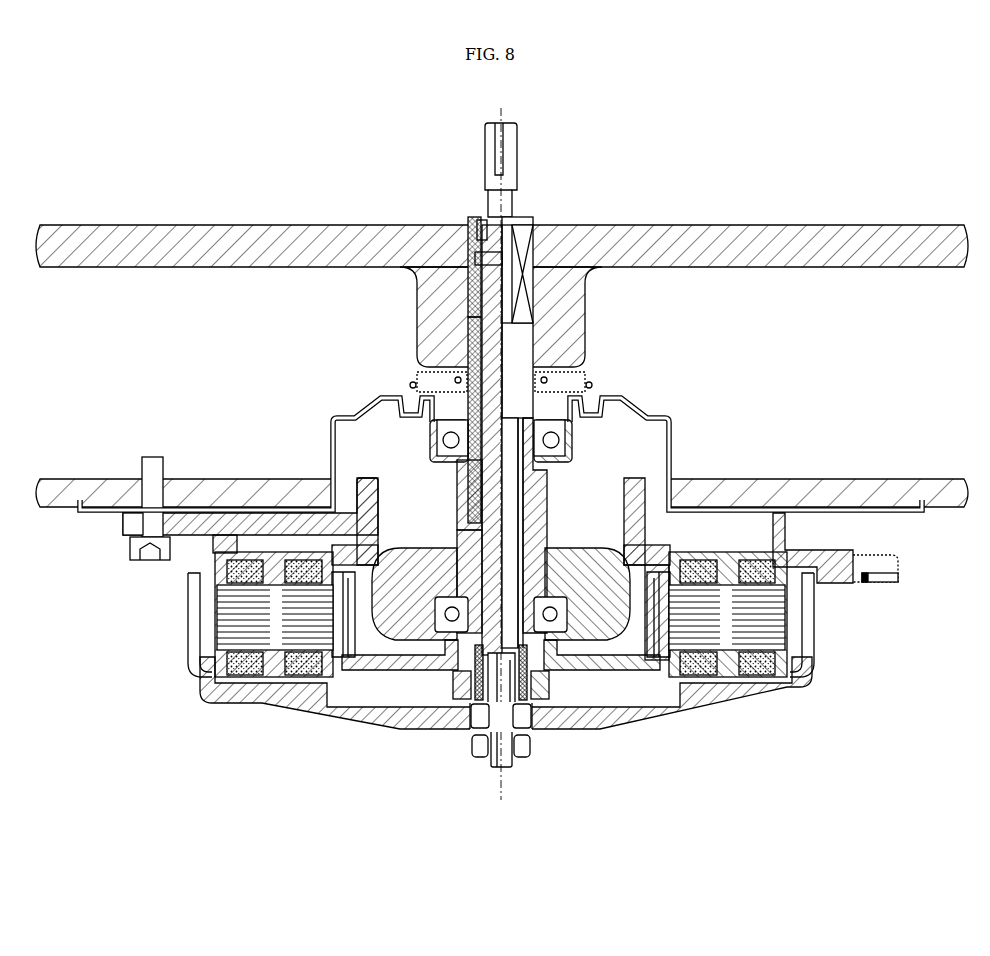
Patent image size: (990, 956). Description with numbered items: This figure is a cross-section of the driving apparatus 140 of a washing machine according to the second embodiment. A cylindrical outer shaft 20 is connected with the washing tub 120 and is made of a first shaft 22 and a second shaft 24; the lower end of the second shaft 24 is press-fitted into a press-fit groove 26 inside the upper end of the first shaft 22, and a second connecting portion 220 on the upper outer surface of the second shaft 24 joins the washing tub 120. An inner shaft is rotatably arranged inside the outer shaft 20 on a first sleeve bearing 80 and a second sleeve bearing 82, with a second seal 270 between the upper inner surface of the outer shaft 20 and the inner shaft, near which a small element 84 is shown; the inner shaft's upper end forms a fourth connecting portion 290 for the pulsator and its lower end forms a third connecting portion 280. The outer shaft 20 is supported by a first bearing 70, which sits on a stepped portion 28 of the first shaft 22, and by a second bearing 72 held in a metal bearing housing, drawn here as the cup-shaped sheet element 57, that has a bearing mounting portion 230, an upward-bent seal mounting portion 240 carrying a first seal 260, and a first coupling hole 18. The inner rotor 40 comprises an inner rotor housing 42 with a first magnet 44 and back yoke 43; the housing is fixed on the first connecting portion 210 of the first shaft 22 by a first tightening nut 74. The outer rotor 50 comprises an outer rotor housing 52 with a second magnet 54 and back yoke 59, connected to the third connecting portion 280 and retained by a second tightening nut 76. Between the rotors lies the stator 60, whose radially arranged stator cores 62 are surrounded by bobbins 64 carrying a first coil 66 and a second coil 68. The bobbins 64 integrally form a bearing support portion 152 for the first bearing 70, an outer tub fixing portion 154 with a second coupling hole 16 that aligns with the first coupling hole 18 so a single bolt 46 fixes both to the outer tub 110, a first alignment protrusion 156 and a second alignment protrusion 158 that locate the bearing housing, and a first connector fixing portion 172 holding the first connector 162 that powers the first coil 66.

The washing tub 120 is at (801, 225).
The outer tub 110 is at (860, 485).
The outer tub fixing portion 154 is at (195, 510).
The first coupling hole 18 is at (147, 480).
The second coupling hole 16 is at (132, 526).
The bolt 46 is at (143, 561).
The housing cover 57 is at (645, 407).
The driving apparatus 140 is at (707, 408).
The first seal 260 is at (600, 383).
The seal mounting portion 240 is at (597, 405).
The bearing mounting portion 230 is at (582, 441).
The second bearing 72 is at (569, 455).
The fourth connecting portion 290 is at (513, 163).
The second connecting portion 220 is at (537, 273).
The protrusion 84 is at (480, 258).
The second seal 270 is at (480, 222).
The first sleeve bearing 80 is at (473, 290).
The first connecting portion 210 is at (492, 768).
The second sleeve bearing 82 is at (502, 792).
The outer shaft 20 is at (432, 546).
The second shaft 24 is at (457, 485).
The first shaft 22 is at (462, 510).
The press-fit groove 26 is at (535, 483).
The first alignment protrusion 156 is at (640, 517).
The back yoke 43 is at (377, 577).
The first bearing 70 is at (556, 598).
The inner rotor 40 is at (501, 676).
The first magnet 44 is at (340, 658).
The inner rotor housing 42 is at (368, 676).
The bearing support portion 152 is at (578, 657).
The stepped portion 28 is at (470, 660).
The third connecting portion 280 is at (521, 700).
The first tightening nut 74 is at (528, 728).
The second tightening nut 76 is at (479, 746).
The outer rotor 50 is at (465, 618).
The second magnet 54 is at (200, 646).
The outer rotor housing 52 is at (200, 674).
The back yoke 59 is at (167, 619).
The stator 60 is at (773, 638).
The bobbin 64 is at (731, 556).
The first coil 66 is at (706, 690).
The second coil 68 is at (753, 689).
The stator core 62 is at (790, 628).
The second alignment protrusion 158 is at (786, 533).
The first connector fixing portion 172 is at (817, 585).
The first connector 162 is at (899, 573).